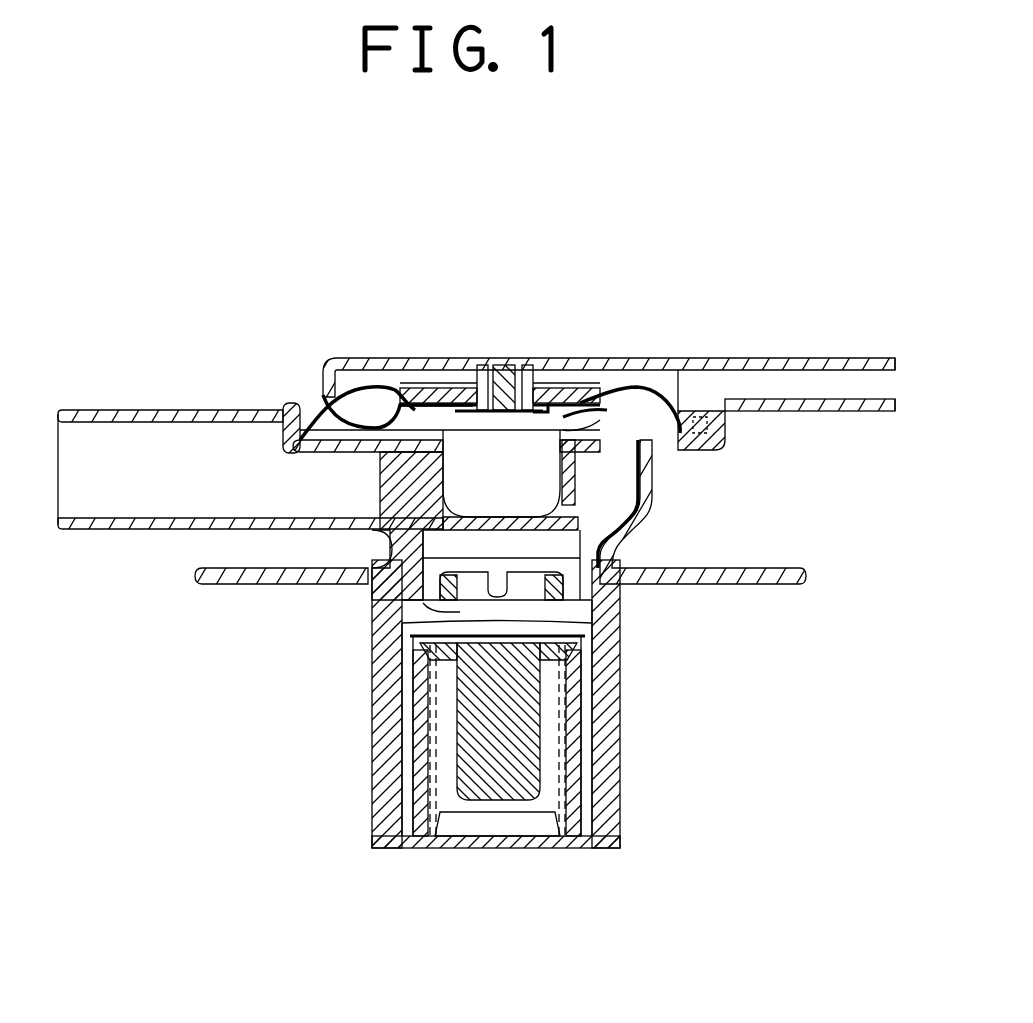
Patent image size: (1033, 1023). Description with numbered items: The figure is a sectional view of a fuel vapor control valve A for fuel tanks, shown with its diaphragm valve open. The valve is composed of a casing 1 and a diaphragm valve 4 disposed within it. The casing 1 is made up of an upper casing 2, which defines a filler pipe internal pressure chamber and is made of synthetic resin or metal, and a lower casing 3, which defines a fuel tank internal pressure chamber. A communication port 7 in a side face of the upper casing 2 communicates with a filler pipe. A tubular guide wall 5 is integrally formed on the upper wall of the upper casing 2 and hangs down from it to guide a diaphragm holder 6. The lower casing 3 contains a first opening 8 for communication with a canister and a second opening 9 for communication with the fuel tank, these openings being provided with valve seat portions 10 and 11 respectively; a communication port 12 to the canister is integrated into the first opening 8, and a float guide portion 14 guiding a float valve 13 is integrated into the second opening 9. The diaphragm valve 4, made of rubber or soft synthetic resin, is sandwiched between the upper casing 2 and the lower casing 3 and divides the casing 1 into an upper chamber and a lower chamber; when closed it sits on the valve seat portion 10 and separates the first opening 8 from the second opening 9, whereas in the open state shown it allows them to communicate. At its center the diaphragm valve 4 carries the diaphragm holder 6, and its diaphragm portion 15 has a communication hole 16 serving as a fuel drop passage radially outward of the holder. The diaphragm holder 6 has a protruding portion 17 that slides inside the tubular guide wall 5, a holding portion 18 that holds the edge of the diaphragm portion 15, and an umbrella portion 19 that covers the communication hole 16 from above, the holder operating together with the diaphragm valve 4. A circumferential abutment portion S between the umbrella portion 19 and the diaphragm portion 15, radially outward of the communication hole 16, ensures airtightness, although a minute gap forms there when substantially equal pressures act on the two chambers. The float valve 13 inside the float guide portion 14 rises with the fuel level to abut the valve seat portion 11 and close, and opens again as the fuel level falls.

The casing 1 is at (626, 357).
The upper casing 2 is at (323, 392).
The lower casing 3 is at (653, 508).
The diaphragm valve 4 is at (647, 358).
The tubular guide wall 5 is at (553, 358).
The diaphragm holder 6 is at (540, 445).
The communication port 7 is at (826, 358).
The first opening 8 is at (467, 472).
The second opening 9 is at (600, 590).
The valve seat portion 10 is at (390, 440).
The valve seat portion 11 is at (440, 600).
The communication port 12 is at (158, 530).
The float valve 13 is at (517, 763).
The float guide portion 14 is at (390, 757).
The diaphragm portion 15 is at (677, 358).
The communication hole 16 is at (635, 442).
The protruding portion 17 is at (503, 358).
The holding portion 18 is at (443, 358).
The umbrella portion 19 is at (423, 358).
The fuel vapor control valve A is at (345, 357).
The circumferential abutment portion S is at (292, 400).